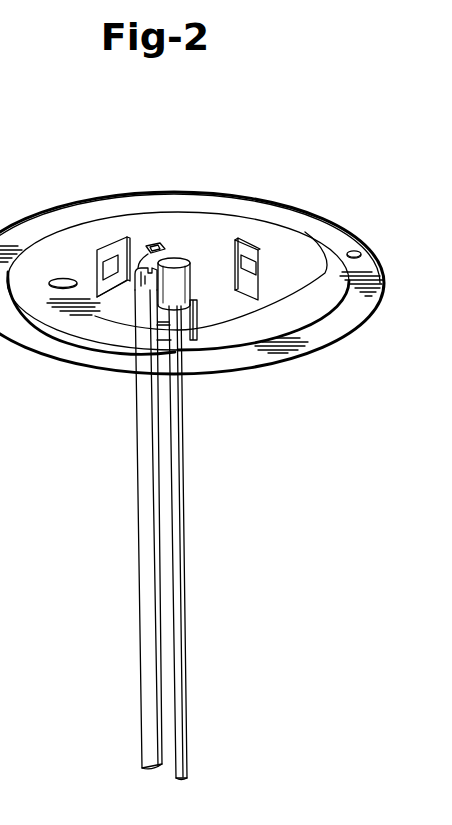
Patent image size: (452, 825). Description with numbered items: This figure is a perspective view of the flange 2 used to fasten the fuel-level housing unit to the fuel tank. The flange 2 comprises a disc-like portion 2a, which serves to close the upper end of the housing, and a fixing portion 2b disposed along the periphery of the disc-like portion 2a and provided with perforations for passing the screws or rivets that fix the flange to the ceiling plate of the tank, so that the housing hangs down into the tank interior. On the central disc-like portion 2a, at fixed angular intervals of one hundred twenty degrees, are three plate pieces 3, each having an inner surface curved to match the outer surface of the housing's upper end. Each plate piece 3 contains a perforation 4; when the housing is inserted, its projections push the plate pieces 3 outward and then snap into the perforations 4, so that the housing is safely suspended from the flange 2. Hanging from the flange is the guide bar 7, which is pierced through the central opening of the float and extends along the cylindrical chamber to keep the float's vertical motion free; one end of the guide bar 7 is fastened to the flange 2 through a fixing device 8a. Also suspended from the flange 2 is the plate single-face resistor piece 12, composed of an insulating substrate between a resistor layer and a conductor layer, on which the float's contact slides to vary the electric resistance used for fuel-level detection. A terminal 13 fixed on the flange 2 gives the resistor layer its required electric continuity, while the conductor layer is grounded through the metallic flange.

The flange member 2 is at (35, 209).
The disc-like portion 2a is at (305, 246).
The fixing portion 2b is at (352, 244).
The plate piece 3 is at (250, 262).
The perforation 4 is at (102, 269).
The guide bar 7 is at (178, 453).
The fixing device 8a is at (191, 282).
The plate single-face resistor piece 12 is at (148, 467).
The terminal 13 is at (166, 246).